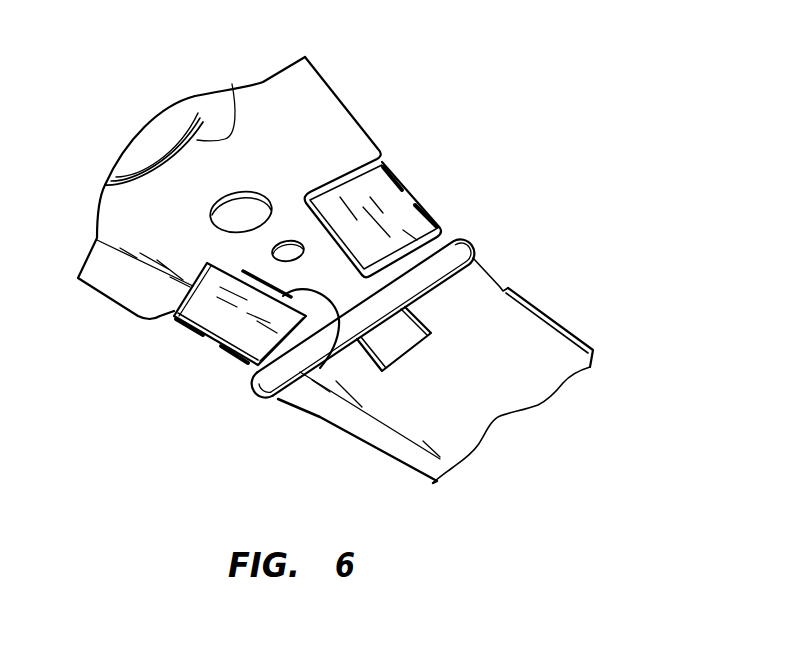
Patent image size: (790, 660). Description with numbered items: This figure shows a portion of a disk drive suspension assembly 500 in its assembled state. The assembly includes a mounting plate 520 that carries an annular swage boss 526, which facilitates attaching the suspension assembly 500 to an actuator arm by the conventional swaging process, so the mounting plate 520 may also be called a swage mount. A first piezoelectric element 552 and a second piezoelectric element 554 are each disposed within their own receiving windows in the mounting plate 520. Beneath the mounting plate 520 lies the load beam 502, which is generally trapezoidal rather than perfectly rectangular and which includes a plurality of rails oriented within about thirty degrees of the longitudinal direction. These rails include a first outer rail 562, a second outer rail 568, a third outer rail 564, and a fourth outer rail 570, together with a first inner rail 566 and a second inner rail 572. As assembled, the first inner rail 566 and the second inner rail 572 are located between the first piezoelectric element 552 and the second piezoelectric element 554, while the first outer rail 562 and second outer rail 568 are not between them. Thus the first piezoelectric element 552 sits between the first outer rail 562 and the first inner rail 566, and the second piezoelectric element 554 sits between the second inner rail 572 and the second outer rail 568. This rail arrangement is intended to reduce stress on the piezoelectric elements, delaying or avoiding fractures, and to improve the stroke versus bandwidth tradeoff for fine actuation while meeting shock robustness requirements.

The suspension assembly 500 is at (531, 122).
The load beam 502 is at (452, 300).
The mounting plate 520 is at (318, 108).
The annular swage boss 526 is at (232, 84).
The first piezoelectric element 552 is at (253, 378).
The second piezoelectric element 554 is at (460, 234).
The first outer rail 562 is at (188, 333).
The third outer rail 564 is at (247, 363).
The first inner rail 566 is at (297, 405).
The second outer rail 568 is at (394, 178).
The fourth outer rail 570 is at (430, 214).
The second inner rail 572 is at (338, 235).